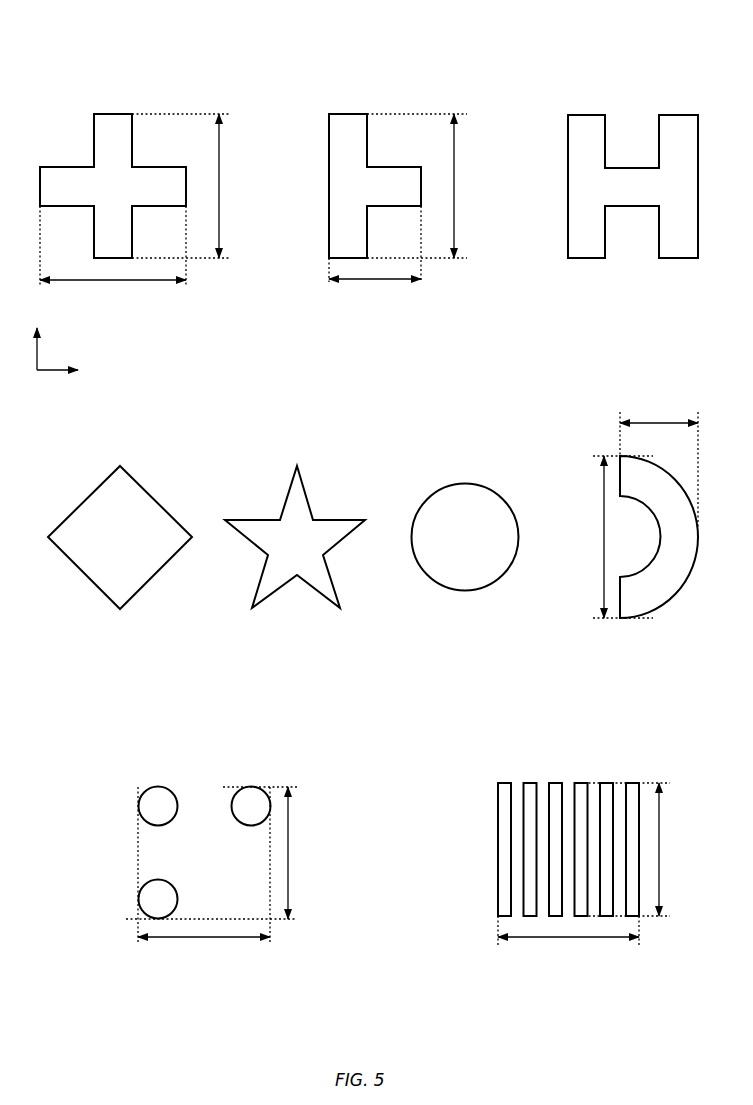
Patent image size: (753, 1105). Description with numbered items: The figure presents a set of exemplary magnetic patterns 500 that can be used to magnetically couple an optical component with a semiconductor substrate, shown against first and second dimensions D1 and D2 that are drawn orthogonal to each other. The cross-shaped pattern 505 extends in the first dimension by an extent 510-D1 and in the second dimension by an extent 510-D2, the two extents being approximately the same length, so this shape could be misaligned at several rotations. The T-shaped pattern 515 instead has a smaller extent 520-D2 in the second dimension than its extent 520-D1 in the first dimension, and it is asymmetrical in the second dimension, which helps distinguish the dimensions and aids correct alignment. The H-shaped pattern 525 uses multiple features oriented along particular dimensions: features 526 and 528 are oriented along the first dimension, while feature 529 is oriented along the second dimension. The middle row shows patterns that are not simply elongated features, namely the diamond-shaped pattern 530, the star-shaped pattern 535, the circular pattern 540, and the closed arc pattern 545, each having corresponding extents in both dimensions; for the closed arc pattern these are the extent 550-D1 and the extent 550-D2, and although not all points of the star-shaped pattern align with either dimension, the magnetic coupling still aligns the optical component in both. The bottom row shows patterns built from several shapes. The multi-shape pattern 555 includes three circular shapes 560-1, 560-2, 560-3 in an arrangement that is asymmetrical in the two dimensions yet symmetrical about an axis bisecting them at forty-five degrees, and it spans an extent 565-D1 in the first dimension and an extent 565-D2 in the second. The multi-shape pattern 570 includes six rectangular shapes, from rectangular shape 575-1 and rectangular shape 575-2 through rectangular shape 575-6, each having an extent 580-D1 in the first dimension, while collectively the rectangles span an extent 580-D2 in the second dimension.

The set of example patterns 500 is at (507, 55).
The cross-shaped pattern 505 is at (94, 137).
The extent in first dimension D1 510-D1 is at (226, 207).
The extent in second dimension D2 510-D2 is at (150, 283).
The T-shaped pattern 515 is at (351, 113).
The extent in D1 dimension 520-D1 is at (461, 207).
The extent in D2 dimension 520-D2 is at (395, 285).
The H-shaped pattern 525 is at (698, 245).
The feature 526 is at (587, 115).
The feature 528 is at (680, 115).
The feature 529 is at (627, 157).
The diamond-shaped pattern 530 is at (85, 500).
The star-shaped pattern 535 is at (285, 498).
The circular pattern 540 is at (428, 498).
The closed arc pattern 545 is at (685, 583).
The extent in D1 dimension 550-D1 is at (602, 583).
The extent in D2 dimension 550-D2 is at (668, 422).
The multi-shape pattern 555 is at (164, 771).
The circular shape 560-1 is at (157, 825).
The circular shape 560-2 is at (252, 825).
The circular shape 560-3 is at (162, 882).
The extent in dimension D1 565-D1 is at (295, 850).
The extent in dimension D2 565-D2 is at (207, 938).
The multi-shape pattern 570 is at (628, 740).
The rectangular shape 575-1 is at (502, 781).
The rectangular shape 575-2 is at (530, 782).
The rectangular shape 575-6 is at (630, 782).
The extent in D1 dimension 580-D1 is at (663, 843).
The extent in D2 dimension 580-D2 is at (572, 940).